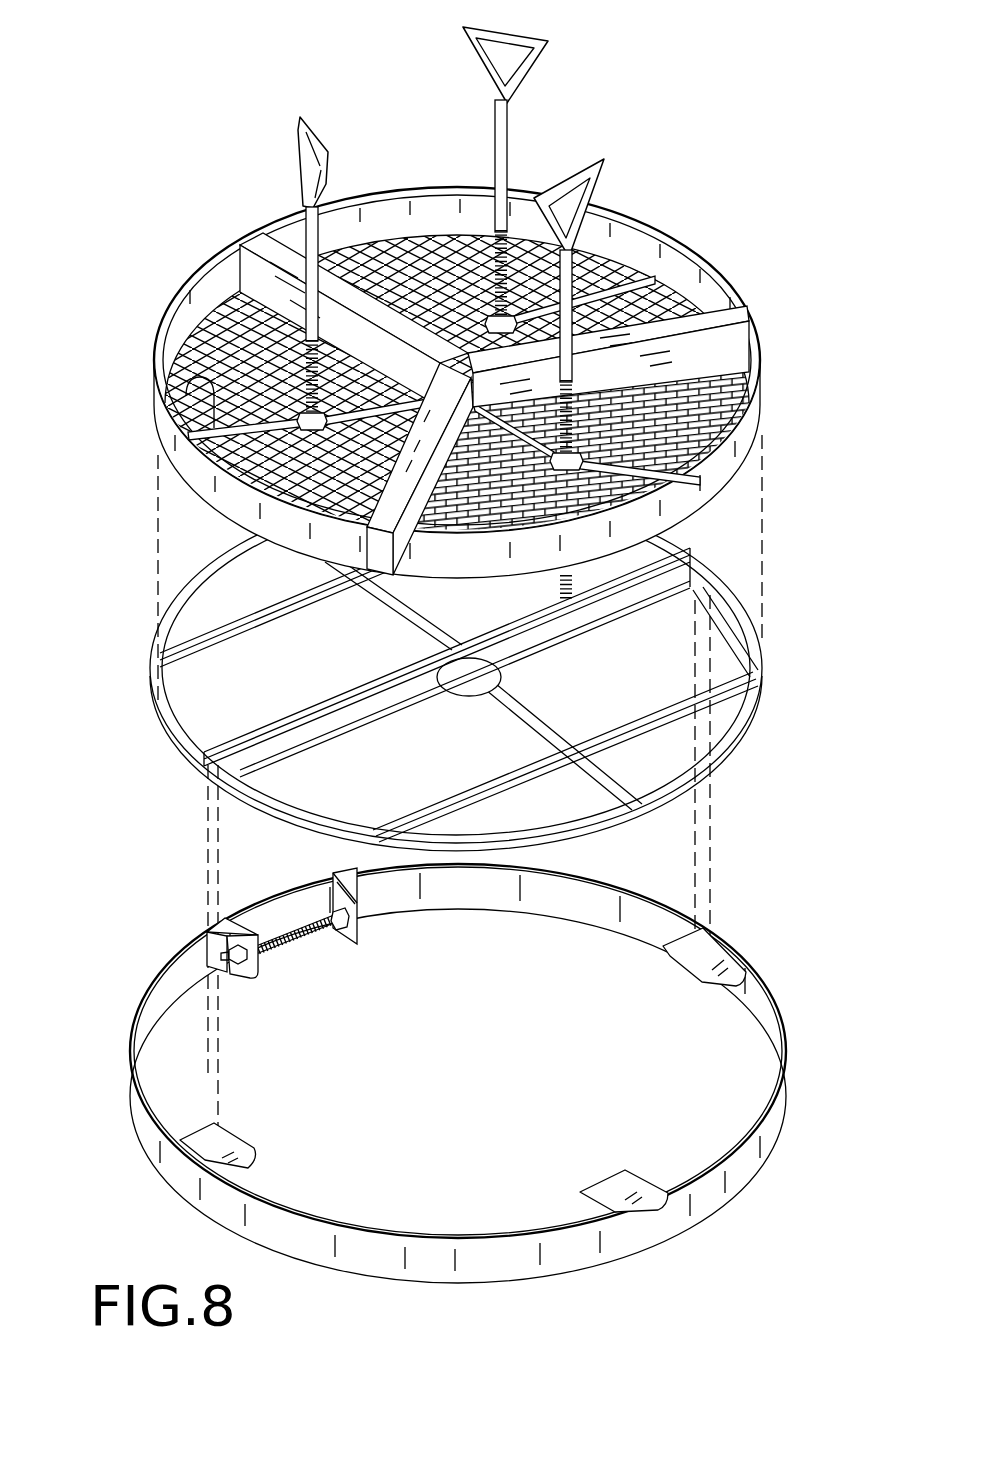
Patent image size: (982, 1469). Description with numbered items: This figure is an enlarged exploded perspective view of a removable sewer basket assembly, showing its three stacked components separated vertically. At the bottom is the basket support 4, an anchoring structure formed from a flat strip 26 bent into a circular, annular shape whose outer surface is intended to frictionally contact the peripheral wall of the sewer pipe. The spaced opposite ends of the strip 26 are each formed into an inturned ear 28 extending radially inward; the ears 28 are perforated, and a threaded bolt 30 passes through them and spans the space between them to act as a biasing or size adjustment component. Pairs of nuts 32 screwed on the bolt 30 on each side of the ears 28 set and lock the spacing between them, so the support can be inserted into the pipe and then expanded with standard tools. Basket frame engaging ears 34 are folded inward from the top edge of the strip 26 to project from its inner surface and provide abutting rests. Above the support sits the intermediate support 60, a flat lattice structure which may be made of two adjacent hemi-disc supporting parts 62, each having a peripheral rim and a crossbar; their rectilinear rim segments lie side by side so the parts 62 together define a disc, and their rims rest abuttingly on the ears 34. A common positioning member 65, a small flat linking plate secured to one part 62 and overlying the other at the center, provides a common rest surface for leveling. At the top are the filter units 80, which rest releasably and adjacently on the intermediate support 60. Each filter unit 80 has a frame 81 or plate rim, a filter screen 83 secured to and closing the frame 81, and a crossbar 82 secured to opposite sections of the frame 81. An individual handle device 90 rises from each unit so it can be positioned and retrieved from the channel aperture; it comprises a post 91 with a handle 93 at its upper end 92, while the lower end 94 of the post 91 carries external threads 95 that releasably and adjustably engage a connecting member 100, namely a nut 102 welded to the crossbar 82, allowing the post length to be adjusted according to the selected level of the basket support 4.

The basket support 4 is at (460, 1076).
The flat strip 26 is at (228, 960).
The inturned ear 28 is at (263, 975).
The threaded bolt 30 is at (262, 952).
The nuts 32 is at (242, 982).
The basket frame engaging ears 34 is at (590, 1185).
The intermediate support 60 is at (442, 672).
The supporting parts 62 is at (205, 762).
The common positioning member 65 is at (760, 663).
The filter units 80 is at (263, 233).
The frame 81 is at (643, 225).
The crossbar 82 is at (205, 383).
The filter screen 83 is at (238, 323).
The handle device 90 is at (275, 93).
The post 91 is at (495, 110).
The upper end 92 is at (653, 279).
The handle 93 is at (541, 42).
The lower end 94 is at (720, 357).
The external threads 95 is at (733, 324).
The connecting member 100 is at (227, 467).
The nut 102 is at (293, 398).